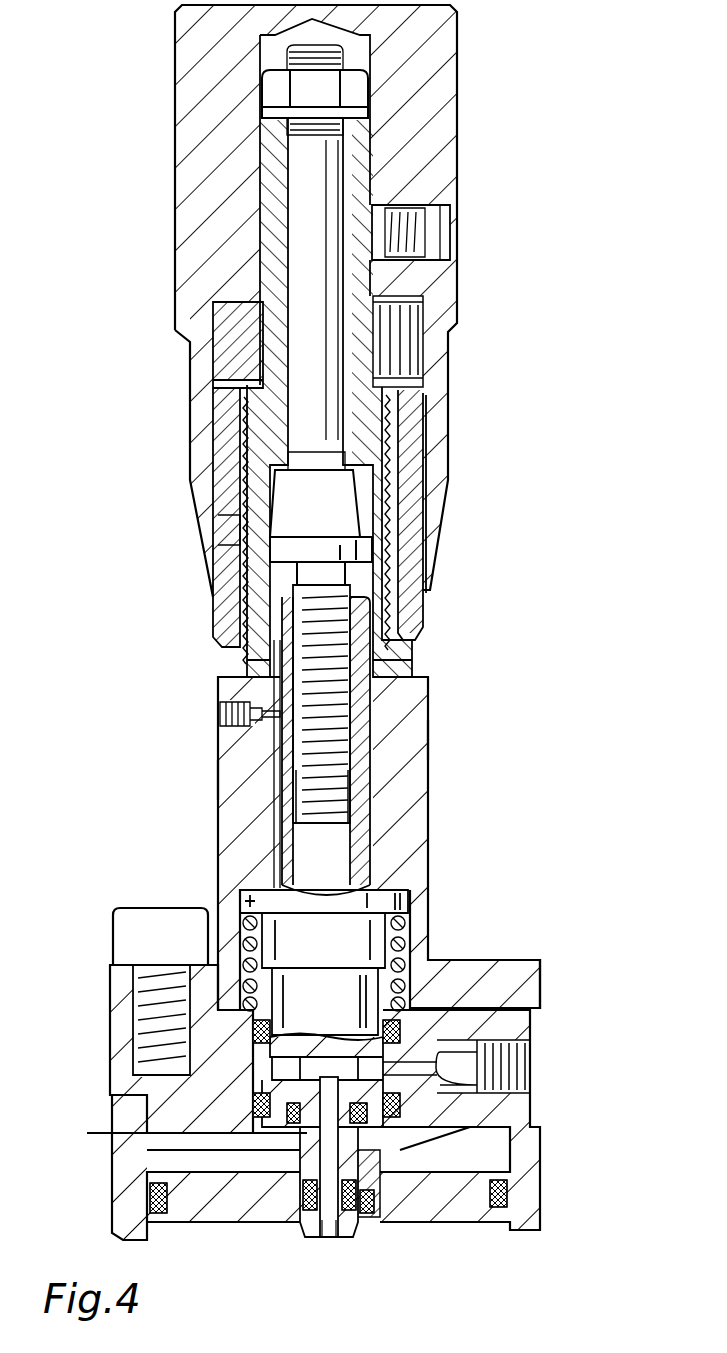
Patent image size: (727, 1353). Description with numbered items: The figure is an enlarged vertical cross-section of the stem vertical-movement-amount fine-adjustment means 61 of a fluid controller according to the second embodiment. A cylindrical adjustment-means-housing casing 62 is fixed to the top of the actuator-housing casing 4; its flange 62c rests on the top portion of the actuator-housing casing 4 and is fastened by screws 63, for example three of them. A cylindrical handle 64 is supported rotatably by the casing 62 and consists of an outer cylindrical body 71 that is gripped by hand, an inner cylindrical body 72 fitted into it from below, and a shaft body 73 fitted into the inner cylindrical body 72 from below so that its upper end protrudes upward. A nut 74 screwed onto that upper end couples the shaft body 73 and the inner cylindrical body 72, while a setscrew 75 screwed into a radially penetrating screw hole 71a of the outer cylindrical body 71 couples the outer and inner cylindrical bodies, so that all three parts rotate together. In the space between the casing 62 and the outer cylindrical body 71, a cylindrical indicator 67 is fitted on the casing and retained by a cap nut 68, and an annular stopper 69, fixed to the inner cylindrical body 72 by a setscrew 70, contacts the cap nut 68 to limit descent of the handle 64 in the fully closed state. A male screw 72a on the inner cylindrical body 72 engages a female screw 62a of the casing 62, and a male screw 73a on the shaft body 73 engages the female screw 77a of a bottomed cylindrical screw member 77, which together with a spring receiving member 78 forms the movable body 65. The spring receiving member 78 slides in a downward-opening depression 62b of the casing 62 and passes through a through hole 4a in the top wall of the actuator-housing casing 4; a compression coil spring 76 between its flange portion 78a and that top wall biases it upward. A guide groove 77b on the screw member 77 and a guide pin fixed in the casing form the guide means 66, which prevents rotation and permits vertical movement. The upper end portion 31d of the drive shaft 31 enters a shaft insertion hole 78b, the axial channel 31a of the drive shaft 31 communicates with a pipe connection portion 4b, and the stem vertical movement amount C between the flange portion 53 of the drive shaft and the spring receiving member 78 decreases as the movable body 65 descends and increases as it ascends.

The actuator-housing casing 4 is at (543, 1150).
The through hole 4a is at (272, 1073).
The pipe connection portion 4b is at (530, 1066).
The drive shaft 31 is at (312, 1218).
The axial channel 31a is at (332, 1232).
The upper end portion 31d is at (462, 1105).
The flange portion 53 is at (375, 1163).
The stem vertical-movement-amount fine-adjustment means 61 is at (526, 368).
The adjustment-means-housing casing 62 is at (432, 800).
The female screw 62a is at (243, 530).
The depression 62b is at (212, 1030).
The flange 62c is at (520, 982).
The screws 63 is at (130, 937).
The handle 64 is at (462, 128).
The movable body 65 is at (430, 750).
The guide means 66 is at (127, 782).
The indicator 67 is at (228, 568).
The cap nut 68 is at (228, 445).
The stopper 69 is at (232, 365).
The setscrew 70 is at (400, 345).
The outer cylindrical body 71 is at (195, 128).
The screw hole 71a is at (440, 210).
The inner cylindrical body 72 is at (268, 208).
The male screw 72a is at (262, 640).
The shaft body 73 is at (305, 280).
The male screw 73a is at (305, 680).
The nut 74 is at (262, 90).
The setscrew 75 is at (420, 233).
The compression coil spring 76 is at (182, 982).
The screw member 77 is at (392, 702).
The female screw 77a is at (335, 672).
The guide groove 77b is at (282, 805).
The spring receiving member 78 is at (372, 945).
The flange portion 78a is at (257, 897).
The shaft insertion hole 78b is at (300, 1205).
The stem vertical movement amount C is at (82, 1118).